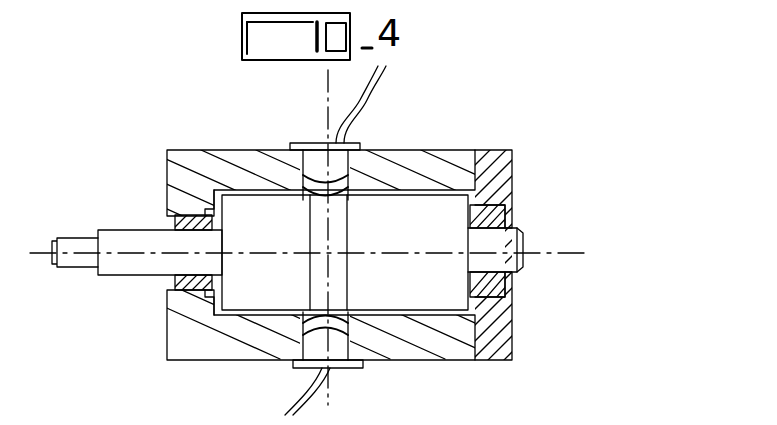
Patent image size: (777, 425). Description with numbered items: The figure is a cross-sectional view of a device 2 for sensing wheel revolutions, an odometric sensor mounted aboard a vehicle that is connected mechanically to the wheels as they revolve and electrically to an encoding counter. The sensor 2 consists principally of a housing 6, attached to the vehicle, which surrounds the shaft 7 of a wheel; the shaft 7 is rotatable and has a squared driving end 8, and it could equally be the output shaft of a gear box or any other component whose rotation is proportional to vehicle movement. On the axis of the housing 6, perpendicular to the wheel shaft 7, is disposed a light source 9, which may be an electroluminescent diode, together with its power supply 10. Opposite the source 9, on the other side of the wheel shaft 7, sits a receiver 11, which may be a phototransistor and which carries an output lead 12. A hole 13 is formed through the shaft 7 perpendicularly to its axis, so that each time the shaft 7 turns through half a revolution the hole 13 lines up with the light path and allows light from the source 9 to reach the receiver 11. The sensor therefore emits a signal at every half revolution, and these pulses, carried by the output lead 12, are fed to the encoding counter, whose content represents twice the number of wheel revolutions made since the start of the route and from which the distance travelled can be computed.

The device for sensing wheel revolutions 2 is at (530, 160).
The housing 6 is at (242, 158).
The shaft 7 is at (130, 277).
The squared driving end 8 is at (76, 237).
The light source 9 is at (360, 118).
The power supply 10 is at (375, 82).
The receiver 11 is at (300, 372).
The output lead 12 is at (318, 396).
The hole 13 is at (300, 222).